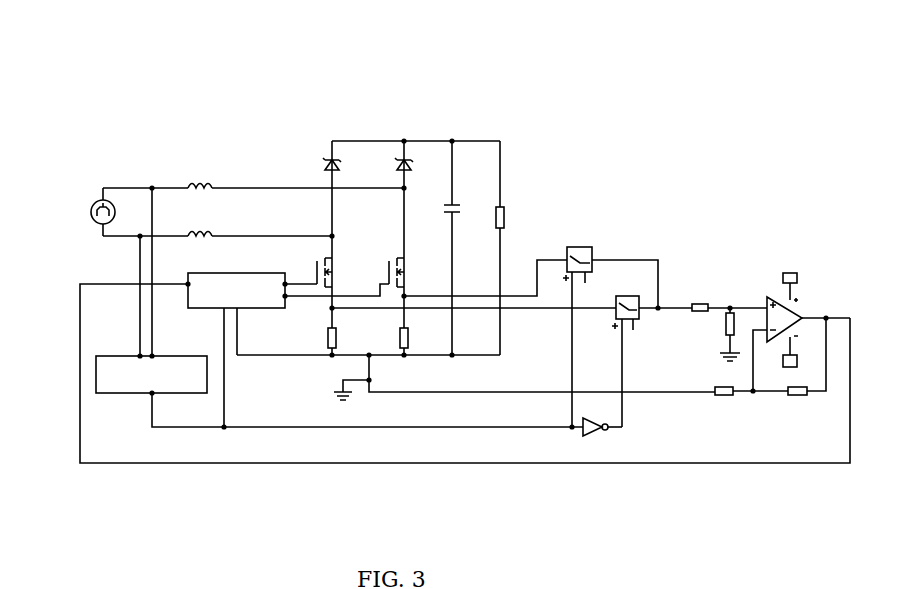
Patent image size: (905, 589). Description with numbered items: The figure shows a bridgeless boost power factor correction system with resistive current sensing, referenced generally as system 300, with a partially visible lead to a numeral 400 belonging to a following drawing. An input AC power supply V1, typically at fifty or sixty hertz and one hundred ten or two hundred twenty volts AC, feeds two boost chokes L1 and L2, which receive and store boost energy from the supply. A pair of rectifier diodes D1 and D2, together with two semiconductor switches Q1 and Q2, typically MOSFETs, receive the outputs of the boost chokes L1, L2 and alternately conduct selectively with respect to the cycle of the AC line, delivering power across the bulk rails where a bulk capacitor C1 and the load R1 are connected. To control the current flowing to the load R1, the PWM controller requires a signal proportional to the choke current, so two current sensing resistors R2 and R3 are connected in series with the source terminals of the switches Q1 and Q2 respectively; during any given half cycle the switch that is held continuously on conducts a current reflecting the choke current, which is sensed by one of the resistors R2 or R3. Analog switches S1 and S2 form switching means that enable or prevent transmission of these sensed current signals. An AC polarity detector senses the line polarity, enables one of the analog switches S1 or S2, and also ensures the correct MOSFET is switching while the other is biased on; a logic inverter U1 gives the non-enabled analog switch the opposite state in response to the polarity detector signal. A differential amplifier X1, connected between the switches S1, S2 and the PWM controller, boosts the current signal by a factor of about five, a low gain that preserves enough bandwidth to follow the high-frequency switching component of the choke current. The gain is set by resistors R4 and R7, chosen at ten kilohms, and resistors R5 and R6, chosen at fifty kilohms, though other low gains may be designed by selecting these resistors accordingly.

The bridgeless boost PFC system 300 is at (585, 92).
The circuit of following figure 400 is at (680, 587).
The input AC power supply V1 is at (91, 212).
The boost choke L1 is at (200, 200).
The boost choke L2 is at (200, 246).
The rectifier diode D1 is at (347, 165).
The rectifier diode D2 is at (417, 165).
The bulk capacitor C1 is at (464, 248).
The load R1 is at (520, 220).
The semiconductor switch Q1 is at (314, 272).
The semiconductor switch Q2 is at (385, 272).
The current sensing resistor R2 is at (320, 338).
The current sensing resistor R3 is at (392, 338).
The analog switch S1 is at (577, 255).
The analog switch S2 is at (626, 303).
The resistor R4 is at (699, 298).
The resistor R5 is at (720, 334).
The resistor R6 is at (799, 401).
The resistor R7 is at (724, 401).
The differential amplifier X1 is at (779, 320).
The logic inverter U1 is at (595, 418).